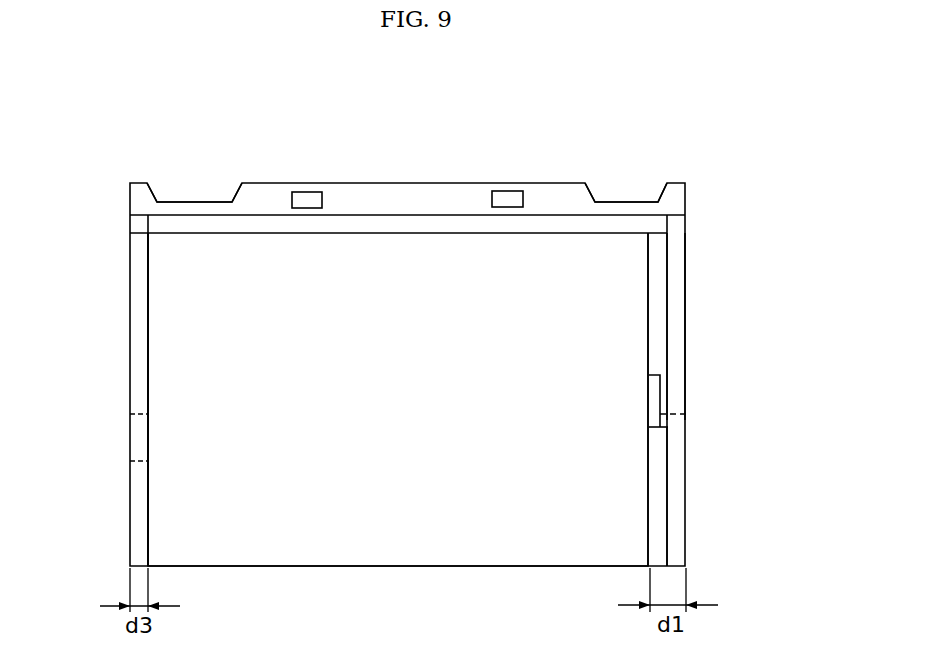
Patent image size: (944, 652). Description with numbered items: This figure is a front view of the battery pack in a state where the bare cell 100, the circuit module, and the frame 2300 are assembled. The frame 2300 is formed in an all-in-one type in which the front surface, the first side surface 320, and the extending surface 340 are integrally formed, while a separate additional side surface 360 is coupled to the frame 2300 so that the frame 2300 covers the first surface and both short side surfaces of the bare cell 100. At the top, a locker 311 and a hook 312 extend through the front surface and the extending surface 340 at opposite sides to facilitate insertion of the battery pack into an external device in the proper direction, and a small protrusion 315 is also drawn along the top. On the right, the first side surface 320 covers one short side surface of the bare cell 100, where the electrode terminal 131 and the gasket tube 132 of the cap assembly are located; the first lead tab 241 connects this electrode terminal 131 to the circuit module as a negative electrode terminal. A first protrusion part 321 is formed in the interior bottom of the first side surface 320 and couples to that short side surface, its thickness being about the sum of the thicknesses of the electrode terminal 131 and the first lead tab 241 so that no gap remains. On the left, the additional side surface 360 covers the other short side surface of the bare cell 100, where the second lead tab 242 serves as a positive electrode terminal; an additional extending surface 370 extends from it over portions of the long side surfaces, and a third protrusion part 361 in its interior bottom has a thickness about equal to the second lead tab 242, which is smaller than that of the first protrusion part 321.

The frame 2300 is at (118, 174).
The hook 312 is at (192, 201).
The extending surface 340 is at (380, 218).
The protrusion 315 is at (505, 200).
The locker 311 is at (626, 192).
The first lead tab 241 is at (680, 246).
The second lead tab 242 is at (135, 267).
The first side surface 320 is at (686, 295).
The first protrusion part 321 is at (658, 518).
The electrode terminal 131 is at (660, 390).
The gasket tube 132 is at (668, 427).
The additional side surface 360 is at (130, 428).
The additional extending surface 370 is at (140, 440).
The third protrusion part 361 is at (136, 507).
The bare cell 100 is at (409, 553).